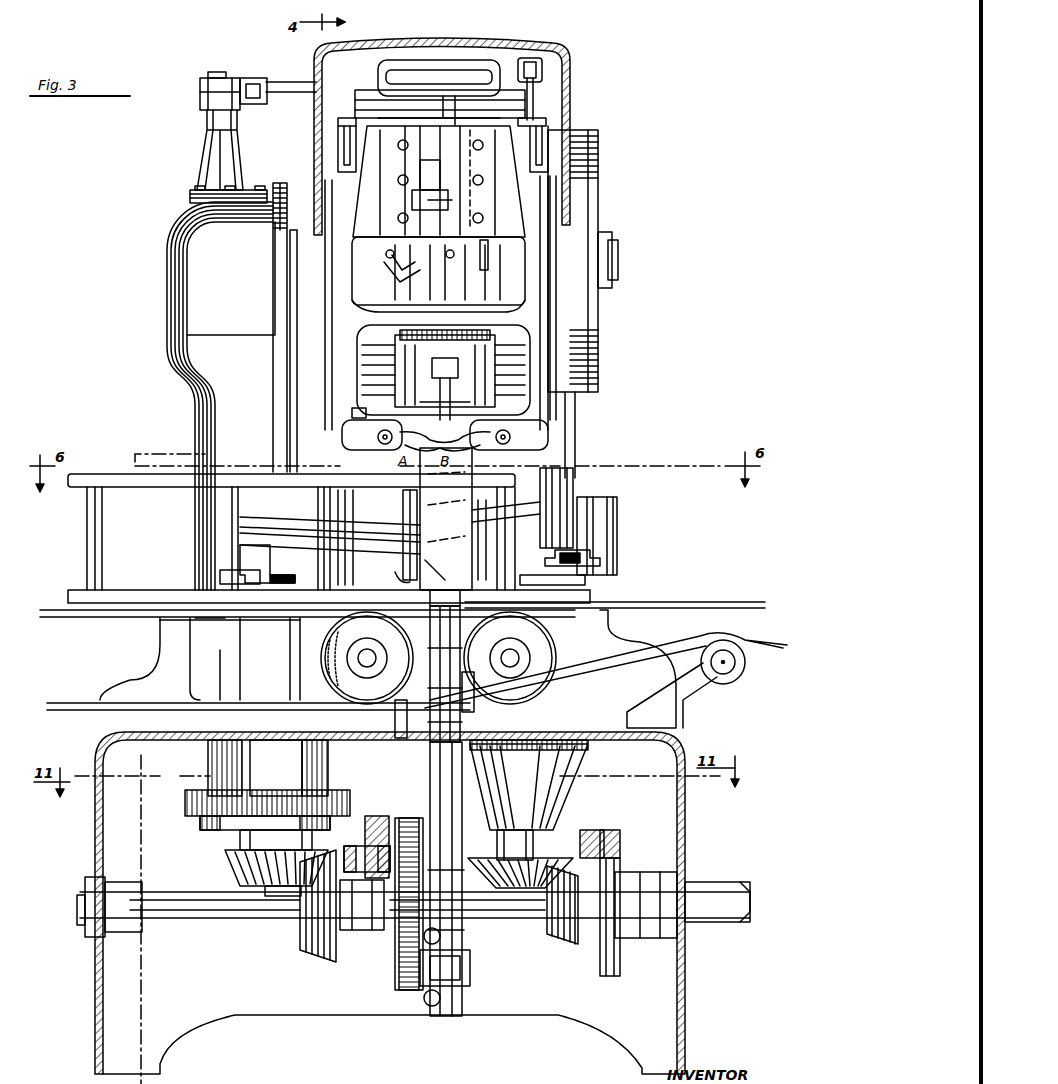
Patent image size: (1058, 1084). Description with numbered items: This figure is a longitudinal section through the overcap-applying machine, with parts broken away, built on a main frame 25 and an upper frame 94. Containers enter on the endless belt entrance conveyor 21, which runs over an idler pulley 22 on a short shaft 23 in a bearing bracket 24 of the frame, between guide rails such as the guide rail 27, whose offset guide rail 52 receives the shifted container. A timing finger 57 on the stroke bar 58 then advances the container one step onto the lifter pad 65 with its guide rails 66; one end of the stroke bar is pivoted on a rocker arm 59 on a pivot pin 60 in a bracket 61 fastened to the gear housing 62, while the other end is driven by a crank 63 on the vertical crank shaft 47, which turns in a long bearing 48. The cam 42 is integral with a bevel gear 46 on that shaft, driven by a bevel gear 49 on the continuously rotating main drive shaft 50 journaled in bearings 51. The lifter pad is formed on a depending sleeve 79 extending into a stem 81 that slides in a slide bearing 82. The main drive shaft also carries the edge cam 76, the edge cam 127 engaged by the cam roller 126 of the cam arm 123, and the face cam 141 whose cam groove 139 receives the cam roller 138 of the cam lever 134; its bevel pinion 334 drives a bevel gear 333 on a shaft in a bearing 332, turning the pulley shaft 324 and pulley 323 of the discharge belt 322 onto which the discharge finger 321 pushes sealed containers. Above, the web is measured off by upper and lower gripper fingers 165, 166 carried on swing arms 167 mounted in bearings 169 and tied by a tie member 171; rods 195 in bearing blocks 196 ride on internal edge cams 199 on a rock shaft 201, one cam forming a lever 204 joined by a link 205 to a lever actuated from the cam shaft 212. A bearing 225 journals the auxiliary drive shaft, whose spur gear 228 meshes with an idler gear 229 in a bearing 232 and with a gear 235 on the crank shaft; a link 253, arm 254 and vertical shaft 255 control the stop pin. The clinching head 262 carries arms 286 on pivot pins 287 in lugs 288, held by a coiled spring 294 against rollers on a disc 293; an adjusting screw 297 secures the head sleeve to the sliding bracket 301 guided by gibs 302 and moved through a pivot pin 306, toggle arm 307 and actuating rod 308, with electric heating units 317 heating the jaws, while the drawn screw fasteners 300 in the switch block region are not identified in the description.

The entrance conveyor 21 is at (60, 618).
The idler pulley 22 is at (324, 640).
The short shaft 23 is at (364, 658).
The bearing bracket 24 is at (345, 712).
The frame 25 is at (686, 820).
The guide rail 27 is at (140, 598).
The cam 42 is at (200, 822).
The bevel gear 46 is at (242, 870).
The vertical crank shaft 47 is at (278, 566).
The long bearing 48 is at (258, 640).
The bevel gear 49 is at (306, 944).
The main drive shaft 50 is at (194, 918).
The bearings 51 is at (126, 930).
The offset guide rail 52 is at (356, 500).
The timing finger 57 is at (404, 548).
The stroke bar 58 is at (330, 536).
The rocker arm 59 is at (617, 522).
The pivot pin 60 is at (598, 494).
The bracket 61 is at (606, 563).
The gear housing 62 is at (532, 712).
The crank 63 is at (225, 577).
The lifter pad 65 is at (395, 575).
The guide rails 66 is at (445, 580).
The edge cam 76 is at (420, 1000).
The depending sleeve 79 is at (428, 604).
The stem 81 is at (445, 674).
The slide bearing 82 is at (445, 782).
The upper frame 94 is at (385, 46).
The cam arm 123 is at (590, 830).
The cam roller 126 is at (608, 830).
The edge cam 127 is at (602, 962).
The cam lever 134 is at (356, 884).
The cam roller 138 is at (362, 852).
The cam groove 139 is at (378, 818).
The face cam 141 is at (396, 982).
The upper gripper fingers 165 is at (445, 435).
The lower gripper fingers 166 is at (410, 442).
The swing arm 167 is at (346, 196).
The bearings 169 is at (458, 120).
The tie member 171 is at (415, 100).
The rods 195 is at (340, 312).
The bearing blocks 196 is at (330, 216).
The internal edge cams 199 is at (342, 156).
The rock shaft 201 is at (546, 122).
The lever 204 is at (531, 92).
The link 205 is at (545, 70).
The cam shaft 212 is at (618, 255).
The bearing 225 is at (210, 752).
The spur gear 228 is at (186, 796).
The idler gear 229 is at (352, 790).
The bearing 232 is at (434, 705).
The gear 235 is at (238, 800).
The link 253 is at (292, 82).
The arm 254 is at (206, 92).
The vertical shaft 255 is at (218, 72).
The clinching head 262 is at (470, 292).
The arms 286 is at (415, 310).
The pivot pins 287 is at (402, 278).
The lugs 288 is at (490, 246).
The disc 293 is at (443, 372).
The coiled spring 294 is at (438, 326).
The adjusting screw 297 is at (398, 262).
The screws 300 is at (445, 170).
The sliding bracket 301 is at (455, 206).
The gibs 302 is at (480, 214).
The pivot pin 306 is at (439, 181).
The toggle arm 307 is at (440, 125).
The actuating rod 308 is at (440, 104).
The electric heating units 317 is at (352, 413).
The discharge finger 321 is at (400, 558).
The discharge belt 322 is at (712, 604).
The pulley 323 is at (540, 638).
The pulley shaft 324 is at (530, 658).
The bearing 332 is at (520, 838).
The bevel gear 333 is at (520, 860).
The bevel pinion 334 is at (556, 934).